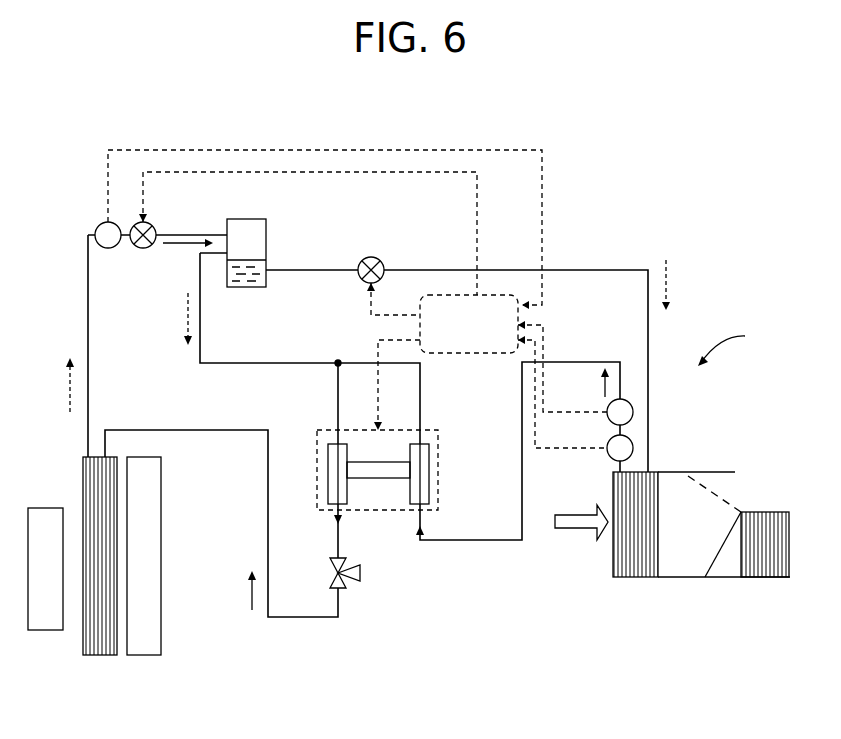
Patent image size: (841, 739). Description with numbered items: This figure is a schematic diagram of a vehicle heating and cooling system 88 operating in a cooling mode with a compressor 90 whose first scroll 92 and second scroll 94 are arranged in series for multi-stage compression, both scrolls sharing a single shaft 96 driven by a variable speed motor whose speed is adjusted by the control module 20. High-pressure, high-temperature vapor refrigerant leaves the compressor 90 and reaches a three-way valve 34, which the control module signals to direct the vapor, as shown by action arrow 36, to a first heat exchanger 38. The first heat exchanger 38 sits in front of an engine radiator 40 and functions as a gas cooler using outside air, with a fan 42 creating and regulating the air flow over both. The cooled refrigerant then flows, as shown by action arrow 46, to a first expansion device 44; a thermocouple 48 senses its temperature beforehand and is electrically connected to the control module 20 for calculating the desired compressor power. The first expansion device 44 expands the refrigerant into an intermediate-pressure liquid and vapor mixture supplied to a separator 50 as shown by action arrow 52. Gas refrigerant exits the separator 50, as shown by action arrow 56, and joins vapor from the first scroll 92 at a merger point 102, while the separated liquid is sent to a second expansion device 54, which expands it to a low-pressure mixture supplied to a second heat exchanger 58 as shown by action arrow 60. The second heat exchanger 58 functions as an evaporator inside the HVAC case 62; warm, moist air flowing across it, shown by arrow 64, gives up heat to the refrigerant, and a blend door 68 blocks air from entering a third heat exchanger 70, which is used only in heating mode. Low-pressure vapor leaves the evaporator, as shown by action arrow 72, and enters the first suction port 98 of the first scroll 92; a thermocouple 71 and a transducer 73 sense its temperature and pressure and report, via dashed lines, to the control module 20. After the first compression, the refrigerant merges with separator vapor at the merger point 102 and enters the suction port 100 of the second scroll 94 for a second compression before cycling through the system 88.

The control module 20 is at (497, 295).
The three-way valve 34 is at (343, 581).
The action arrow 36 is at (248, 595).
The first heat exchanger 38 is at (83, 478).
The engine radiator 40 is at (161, 635).
The fan 42 is at (42, 631).
The first expansion device 44 is at (140, 248).
The action arrow 46 is at (68, 390).
The thermocouple 48 is at (100, 225).
The separator 50 is at (266, 237).
The action arrow 52 is at (185, 249).
The second expansion device 54 is at (382, 264).
The action arrow 56 is at (185, 320).
The second heat exchanger 58 is at (633, 578).
The action arrow 60 is at (667, 282).
The HVAC case 62 is at (723, 584).
The arrow 64 is at (572, 532).
The blend door 68 is at (723, 540).
The third heat exchanger 70 is at (773, 512).
The thermocouple 71 is at (633, 447).
The action arrow 72 is at (603, 388).
The transducer 73 is at (633, 408).
The vehicle heating and cooling system 88 is at (738, 344).
The compressor 90 is at (438, 478).
The first scroll 92 is at (430, 450).
The second scroll 94 is at (328, 470).
The shaft 96 is at (358, 478).
The first suction port 98 is at (422, 504).
The first suction port 100 is at (333, 444).
The merger point 102 is at (338, 360).